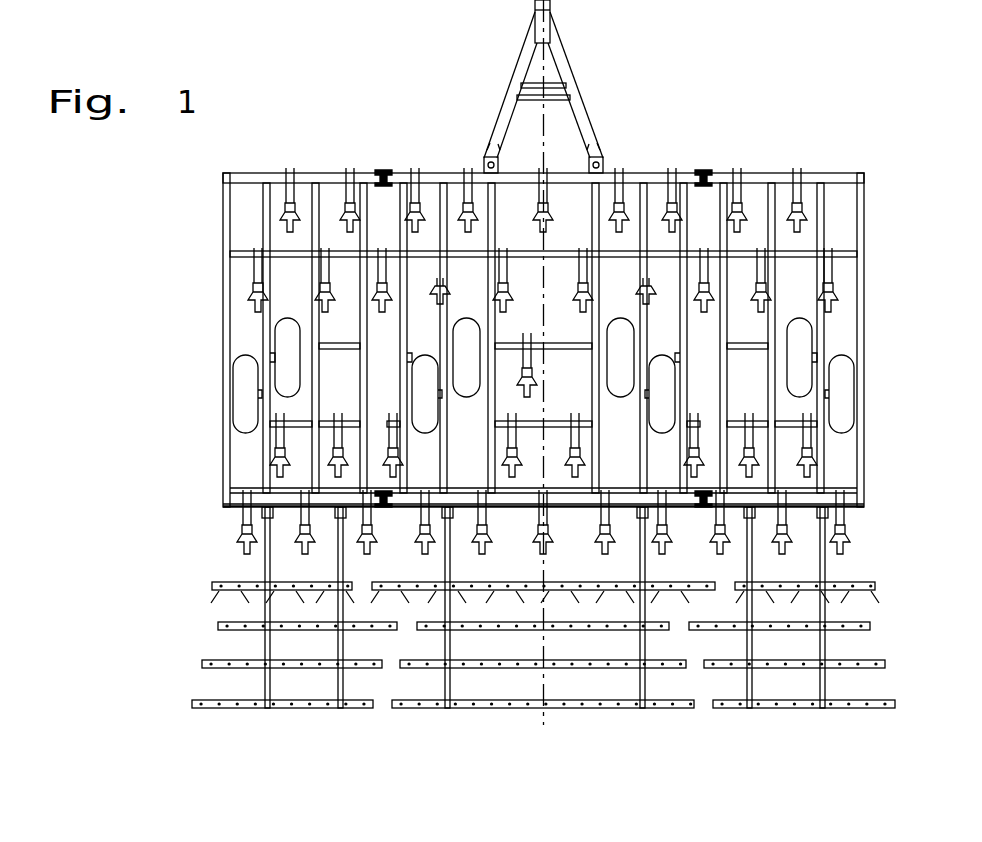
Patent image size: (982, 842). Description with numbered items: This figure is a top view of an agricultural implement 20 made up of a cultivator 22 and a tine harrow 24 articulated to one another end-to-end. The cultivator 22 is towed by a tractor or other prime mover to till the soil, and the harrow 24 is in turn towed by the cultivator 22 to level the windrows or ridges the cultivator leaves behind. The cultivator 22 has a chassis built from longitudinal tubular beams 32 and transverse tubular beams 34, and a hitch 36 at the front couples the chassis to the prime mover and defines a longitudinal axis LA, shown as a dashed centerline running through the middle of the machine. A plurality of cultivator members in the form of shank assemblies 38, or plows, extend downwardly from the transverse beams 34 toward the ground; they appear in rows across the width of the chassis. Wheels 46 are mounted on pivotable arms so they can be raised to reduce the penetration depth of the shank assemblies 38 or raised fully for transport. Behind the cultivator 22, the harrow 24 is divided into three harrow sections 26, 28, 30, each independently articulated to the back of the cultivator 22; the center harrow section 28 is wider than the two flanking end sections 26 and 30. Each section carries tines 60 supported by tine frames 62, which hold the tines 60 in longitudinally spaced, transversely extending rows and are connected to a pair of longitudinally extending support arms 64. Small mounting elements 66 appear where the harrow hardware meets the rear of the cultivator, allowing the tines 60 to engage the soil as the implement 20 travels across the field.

The agricultural implement 20 is at (889, 323).
The cultivator 22 is at (868, 212).
The tine harrow 24 is at (870, 568).
The harrow section 26 is at (275, 714).
The center harrow section 28 is at (512, 714).
The harrow section 30 is at (805, 714).
The longitudinal tubular beams 32 is at (225, 283).
The transverse tubular beams 34 is at (762, 180).
The hitch 36 is at (563, 60).
The shank assembly 38 is at (346, 206).
The wheels 46 is at (233, 372).
The tines 60 is at (625, 596).
The tine frames 62 is at (220, 626).
The support arms 64 is at (338, 682).
The mounting bracket 66 is at (260, 513).
The longitudinal axis LA is at (548, 126).